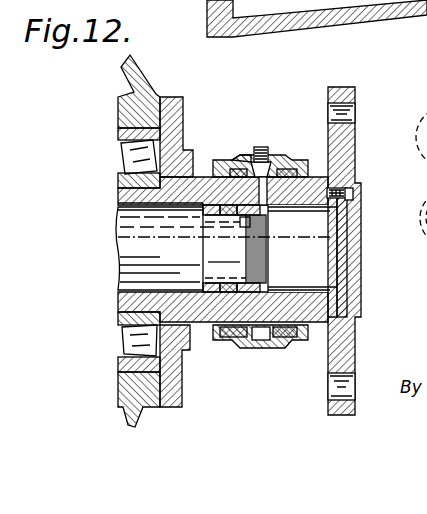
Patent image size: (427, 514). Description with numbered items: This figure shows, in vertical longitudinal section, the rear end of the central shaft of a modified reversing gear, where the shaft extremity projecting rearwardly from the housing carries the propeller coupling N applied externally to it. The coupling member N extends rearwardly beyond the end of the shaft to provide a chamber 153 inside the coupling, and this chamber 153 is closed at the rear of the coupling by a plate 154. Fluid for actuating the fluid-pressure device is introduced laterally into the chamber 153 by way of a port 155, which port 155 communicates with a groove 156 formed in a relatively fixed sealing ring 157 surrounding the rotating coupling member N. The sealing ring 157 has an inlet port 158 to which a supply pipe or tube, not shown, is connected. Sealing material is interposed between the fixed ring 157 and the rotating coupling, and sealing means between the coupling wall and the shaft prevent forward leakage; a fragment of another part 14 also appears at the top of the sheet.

The housing fragment 14 is at (292, 18).
The chamber 153 is at (318, 258).
The plate 154 is at (344, 260).
The port 155 is at (282, 162).
The groove 156 is at (250, 156).
The sealing ring 157 is at (279, 158).
The inlet port 158 is at (262, 147).
The propeller coupling N is at (348, 137).